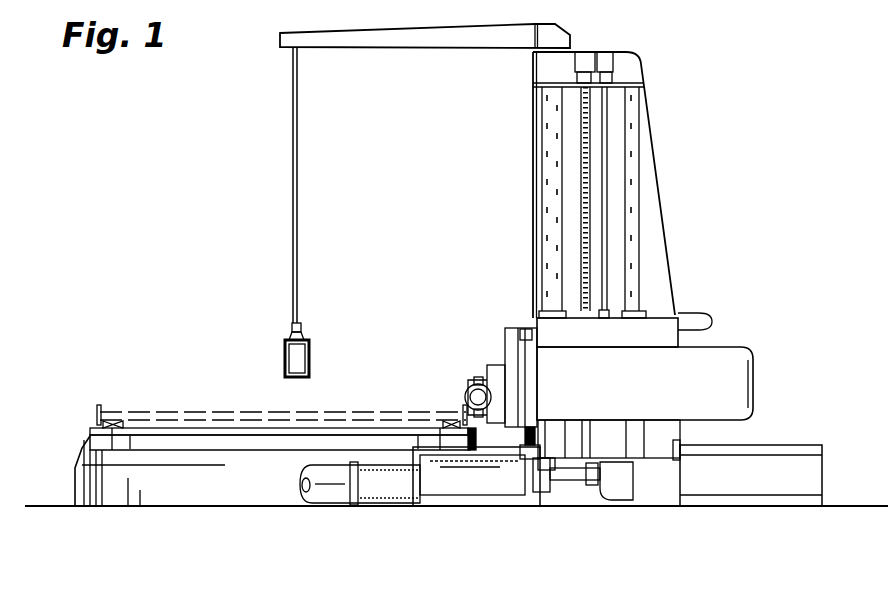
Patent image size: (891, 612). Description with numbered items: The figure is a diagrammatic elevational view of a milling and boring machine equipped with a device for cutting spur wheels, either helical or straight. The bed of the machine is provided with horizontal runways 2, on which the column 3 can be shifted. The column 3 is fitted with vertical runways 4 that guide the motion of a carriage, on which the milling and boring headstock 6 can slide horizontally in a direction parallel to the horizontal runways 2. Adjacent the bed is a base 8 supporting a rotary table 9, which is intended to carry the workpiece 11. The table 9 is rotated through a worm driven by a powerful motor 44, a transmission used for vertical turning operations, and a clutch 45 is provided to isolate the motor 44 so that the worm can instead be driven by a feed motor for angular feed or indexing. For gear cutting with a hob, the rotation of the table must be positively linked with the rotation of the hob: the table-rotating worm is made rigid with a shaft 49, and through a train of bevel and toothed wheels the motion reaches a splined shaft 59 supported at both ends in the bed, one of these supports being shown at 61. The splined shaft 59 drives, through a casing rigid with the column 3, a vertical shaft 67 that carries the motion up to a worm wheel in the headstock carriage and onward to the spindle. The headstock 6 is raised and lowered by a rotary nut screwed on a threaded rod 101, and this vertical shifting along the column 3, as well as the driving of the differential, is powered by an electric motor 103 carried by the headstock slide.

The horizontal runways 2 is at (757, 450).
The column 3 is at (678, 436).
The vertical runways 4 is at (550, 150).
The milling and boring headstock 6 is at (715, 358).
The base 8 is at (251, 506).
The rotary table 9 is at (90, 441).
The workpiece 11 is at (129, 413).
The motor 44 is at (333, 490).
The clutch 45 is at (453, 506).
The shaft 49 is at (570, 484).
The splined shaft 59 is at (592, 468).
The support 61 is at (635, 466).
The vertical shaft 67 is at (509, 328).
The threaded rod 101 is at (583, 230).
The electric motor 103 is at (698, 318).